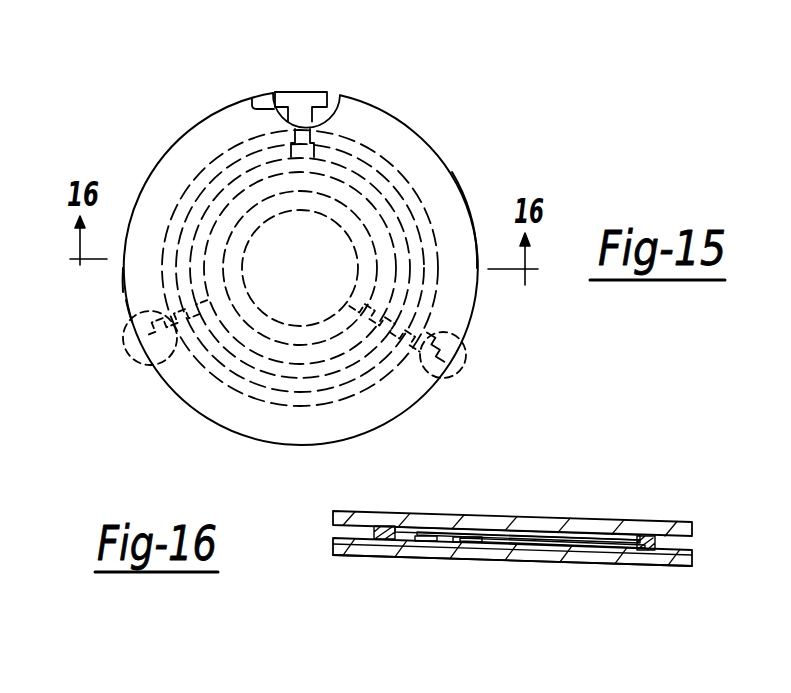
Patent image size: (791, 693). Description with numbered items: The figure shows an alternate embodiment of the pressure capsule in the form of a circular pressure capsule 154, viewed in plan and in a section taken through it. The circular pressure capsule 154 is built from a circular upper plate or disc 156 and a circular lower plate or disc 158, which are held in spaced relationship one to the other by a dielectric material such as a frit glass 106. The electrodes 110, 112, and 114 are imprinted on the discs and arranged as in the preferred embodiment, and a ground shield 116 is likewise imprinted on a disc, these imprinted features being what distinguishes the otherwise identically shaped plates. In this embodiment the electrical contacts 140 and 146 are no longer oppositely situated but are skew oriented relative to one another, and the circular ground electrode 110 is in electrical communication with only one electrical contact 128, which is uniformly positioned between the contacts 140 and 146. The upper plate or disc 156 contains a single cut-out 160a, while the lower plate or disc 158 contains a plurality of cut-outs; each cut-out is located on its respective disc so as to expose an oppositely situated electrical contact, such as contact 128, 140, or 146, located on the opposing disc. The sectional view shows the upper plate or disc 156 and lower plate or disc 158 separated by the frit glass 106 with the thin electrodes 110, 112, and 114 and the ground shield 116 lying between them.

In FIG. 15, the frit glass 106 is at (205, 158).
In FIG. 16, the frit glass 106 is at (372, 530).
In FIG. 15, the ground electrode 110 is at (348, 128).
In FIG. 16, the ground electrode 110 is at (495, 528).
In FIG. 15, the electrode 112 is at (337, 155).
In FIG. 16, the electrode 112 is at (598, 532).
In FIG. 15, the electrode 114 is at (347, 178).
In FIG. 16, the electrode 114 is at (527, 545).
In FIG. 16, the ground shield 116 is at (453, 547).
In FIG. 15, the electrical contact 128 is at (301, 99).
In FIG. 15, the electrical contact 140 is at (452, 366).
In FIG. 15, the electrical contact 146 is at (138, 366).
In FIG. 15, the circular pressure capsule 154 is at (452, 172).
In FIG. 15, the upper plate or disc 156 is at (123, 292).
In FIG. 16, the upper plate or disc 156 is at (737, 476).
In FIG. 15, the lower plate or disc 158 is at (132, 322).
In FIG. 16, the lower plate or disc 158 is at (697, 558).
In FIG. 15, the cut-out 160a is at (254, 96).